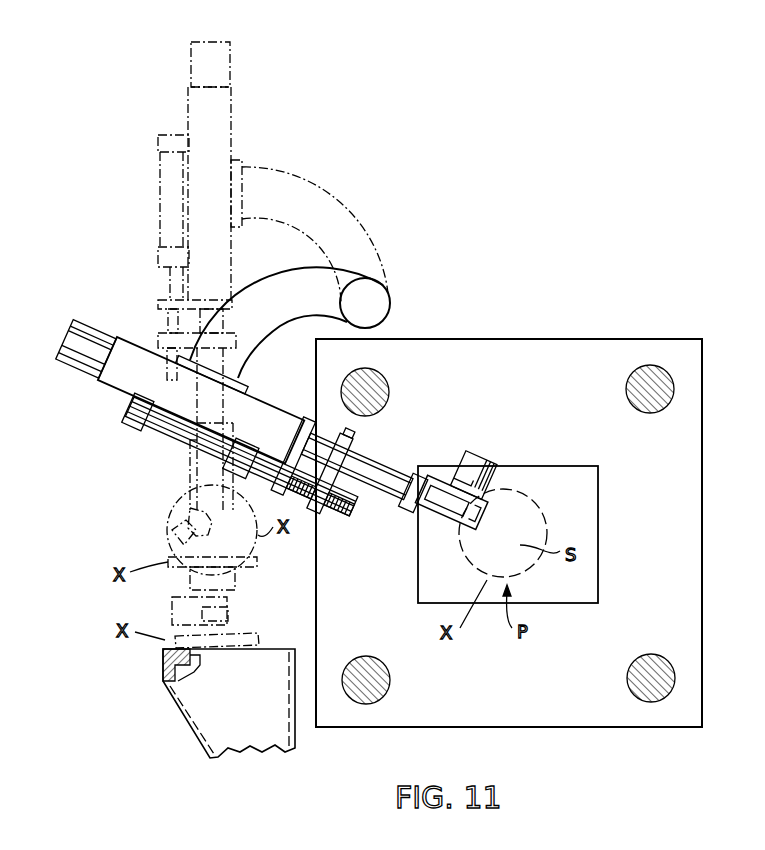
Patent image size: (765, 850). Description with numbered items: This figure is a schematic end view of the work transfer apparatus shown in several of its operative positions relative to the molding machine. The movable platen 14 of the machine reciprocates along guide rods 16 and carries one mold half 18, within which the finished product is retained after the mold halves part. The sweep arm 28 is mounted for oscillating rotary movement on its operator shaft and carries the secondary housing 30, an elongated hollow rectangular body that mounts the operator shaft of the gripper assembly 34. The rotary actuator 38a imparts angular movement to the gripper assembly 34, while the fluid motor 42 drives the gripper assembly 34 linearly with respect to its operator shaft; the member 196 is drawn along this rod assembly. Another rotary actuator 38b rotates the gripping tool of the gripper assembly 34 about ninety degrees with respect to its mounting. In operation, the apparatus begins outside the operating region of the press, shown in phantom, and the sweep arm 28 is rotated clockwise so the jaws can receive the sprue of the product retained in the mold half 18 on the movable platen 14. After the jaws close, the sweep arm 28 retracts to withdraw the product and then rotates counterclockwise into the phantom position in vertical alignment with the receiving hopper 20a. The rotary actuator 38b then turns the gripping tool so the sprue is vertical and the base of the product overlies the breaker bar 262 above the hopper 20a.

The movable platen 14 is at (565, 338).
The guide rods 16 is at (673, 380).
The mold half 18 is at (598, 573).
The receiving hopper 20a is at (212, 742).
The sweep arm 28 is at (291, 270).
The secondary housing 30 is at (109, 390).
The gripper assembly 34 is at (448, 526).
The rotary actuator 38a is at (93, 325).
The rotary actuator 38b is at (482, 456).
The fluid motor 42 is at (165, 440).
The rod 196 is at (366, 458).
The breaker bar 262 is at (163, 683).